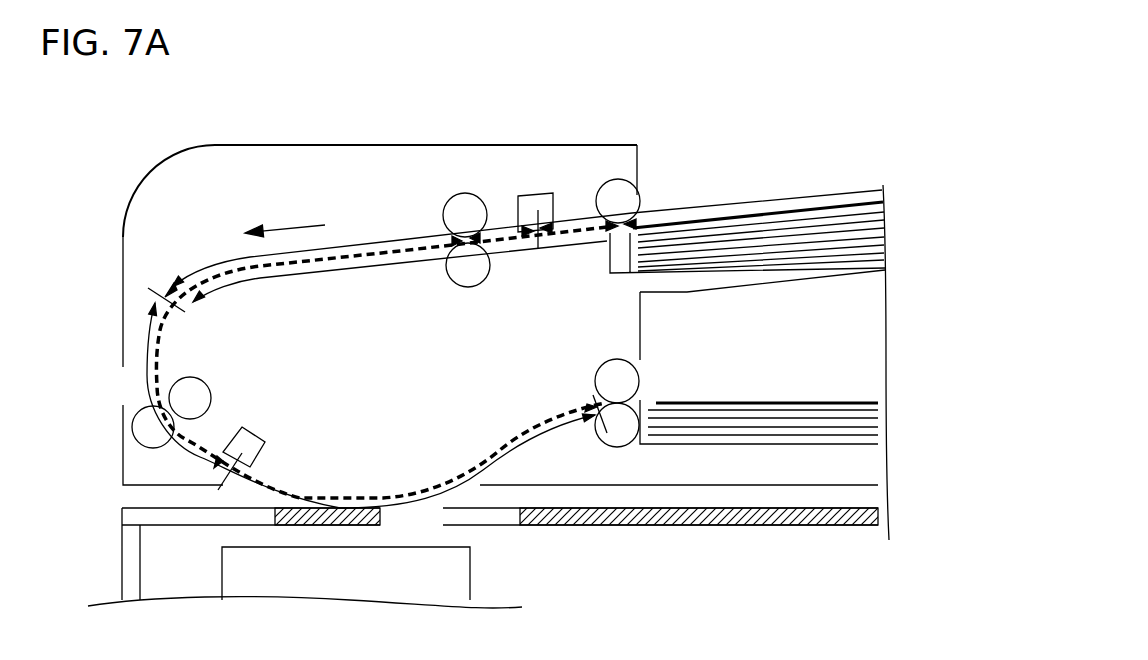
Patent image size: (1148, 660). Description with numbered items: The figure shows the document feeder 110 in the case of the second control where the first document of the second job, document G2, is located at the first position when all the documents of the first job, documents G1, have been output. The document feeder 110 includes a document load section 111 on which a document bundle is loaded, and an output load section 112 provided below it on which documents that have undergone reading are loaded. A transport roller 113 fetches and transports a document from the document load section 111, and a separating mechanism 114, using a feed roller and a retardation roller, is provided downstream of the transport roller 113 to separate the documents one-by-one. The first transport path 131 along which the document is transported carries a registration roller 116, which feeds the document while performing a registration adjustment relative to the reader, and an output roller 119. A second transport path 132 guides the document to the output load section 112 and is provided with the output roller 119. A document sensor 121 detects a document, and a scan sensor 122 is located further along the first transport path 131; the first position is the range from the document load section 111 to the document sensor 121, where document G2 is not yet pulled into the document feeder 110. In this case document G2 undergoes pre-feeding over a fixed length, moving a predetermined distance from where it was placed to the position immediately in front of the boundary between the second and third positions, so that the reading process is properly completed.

The document feeder 110 is at (808, 115).
The first transport path 131 is at (228, 268).
The separating mechanism 114 is at (462, 185).
The document sensor 121 is at (535, 195).
The transport roller 113 is at (609, 188).
The document load section 111 is at (795, 275).
The document G2 is at (672, 225).
The registration roller 116 is at (205, 385).
The scan sensor 122 is at (260, 432).
The output roller 119 is at (598, 363).
The output load section 112 is at (865, 457).
The document G1 is at (826, 398).
The second transport path 132 is at (658, 402).